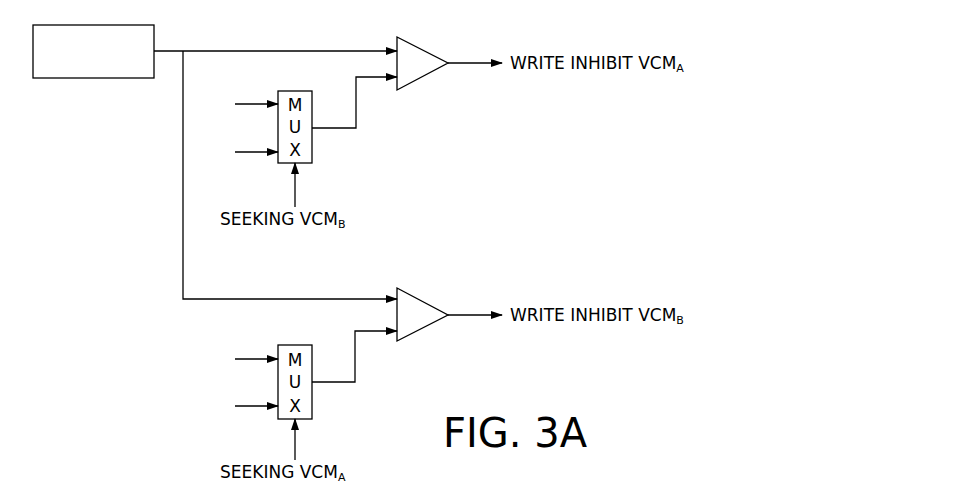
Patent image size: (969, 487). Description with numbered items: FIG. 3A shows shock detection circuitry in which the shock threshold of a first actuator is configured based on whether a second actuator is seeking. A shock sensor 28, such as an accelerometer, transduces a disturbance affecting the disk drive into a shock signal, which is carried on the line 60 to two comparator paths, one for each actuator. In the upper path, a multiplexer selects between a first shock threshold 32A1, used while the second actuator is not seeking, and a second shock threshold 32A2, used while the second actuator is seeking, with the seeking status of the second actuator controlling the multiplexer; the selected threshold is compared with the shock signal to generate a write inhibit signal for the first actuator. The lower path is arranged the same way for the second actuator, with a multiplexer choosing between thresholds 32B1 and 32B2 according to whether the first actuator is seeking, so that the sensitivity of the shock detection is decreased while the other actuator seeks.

The shock sensor 28 is at (90, 25).
The shock sensor output signal line 60 is at (209, 49).
The first shock threshold 32A1 is at (249, 101).
The second shock threshold 32A2 is at (250, 156).
The first threshold input for VCM B 32B1 is at (249, 357).
The second threshold input for VCM B 32B2 is at (250, 410).